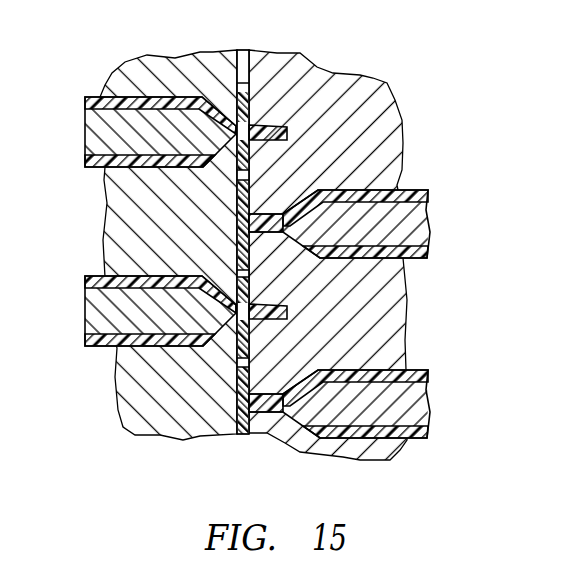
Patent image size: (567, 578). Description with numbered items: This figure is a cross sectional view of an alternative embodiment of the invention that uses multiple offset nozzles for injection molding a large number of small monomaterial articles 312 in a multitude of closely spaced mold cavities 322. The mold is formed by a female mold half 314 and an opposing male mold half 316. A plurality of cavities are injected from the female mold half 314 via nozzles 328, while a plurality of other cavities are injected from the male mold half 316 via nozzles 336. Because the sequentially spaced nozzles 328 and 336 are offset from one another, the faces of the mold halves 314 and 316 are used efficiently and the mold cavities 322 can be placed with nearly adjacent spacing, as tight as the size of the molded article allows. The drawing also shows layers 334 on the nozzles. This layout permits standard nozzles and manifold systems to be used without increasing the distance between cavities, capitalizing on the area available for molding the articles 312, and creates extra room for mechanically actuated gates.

The monomaterial articles 312 is at (258, 133).
The female mold half 314 is at (355, 88).
The male mold half 316 is at (138, 400).
The mold cavities 322 is at (249, 403).
The nozzles 328 is at (420, 215).
The coating layer 334 is at (89, 162).
The nozzles 336 is at (97, 136).